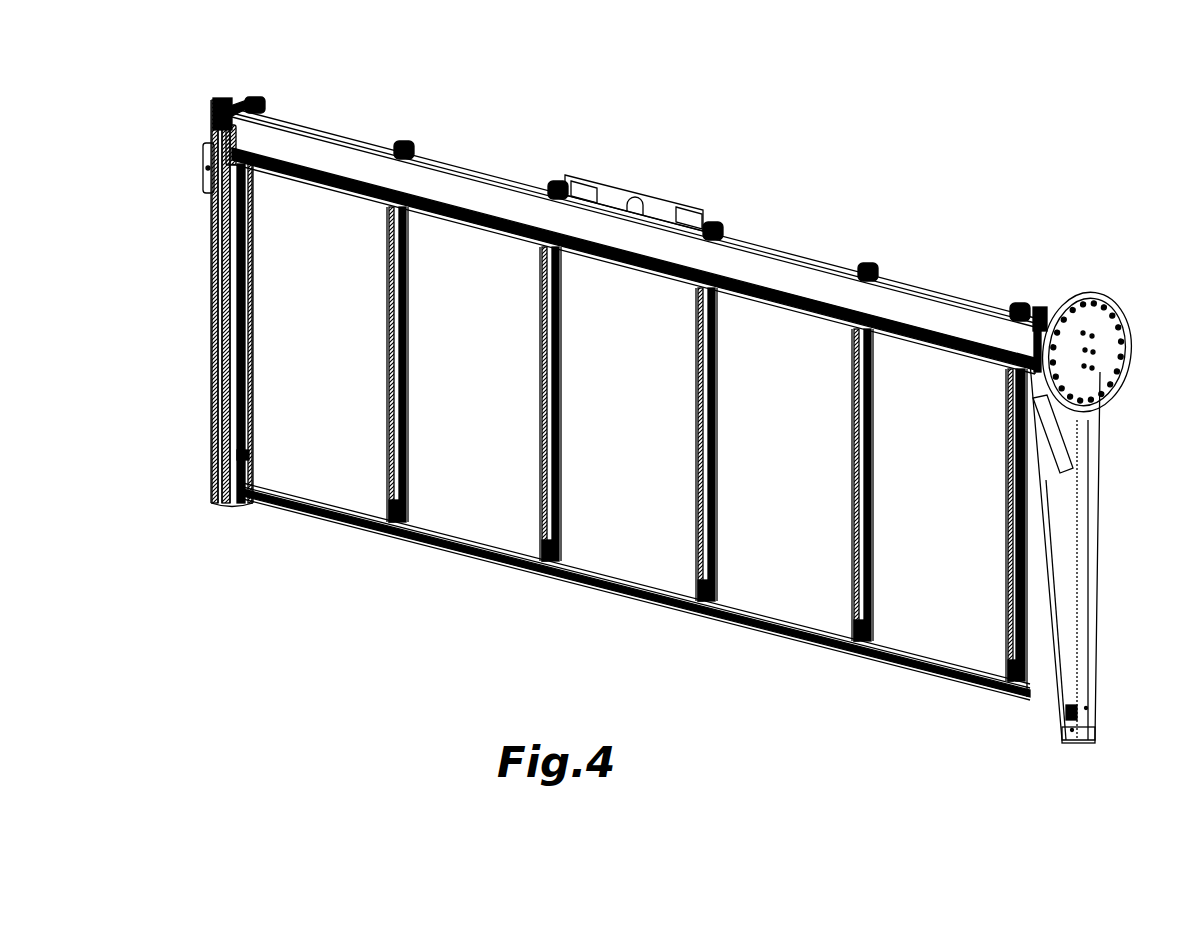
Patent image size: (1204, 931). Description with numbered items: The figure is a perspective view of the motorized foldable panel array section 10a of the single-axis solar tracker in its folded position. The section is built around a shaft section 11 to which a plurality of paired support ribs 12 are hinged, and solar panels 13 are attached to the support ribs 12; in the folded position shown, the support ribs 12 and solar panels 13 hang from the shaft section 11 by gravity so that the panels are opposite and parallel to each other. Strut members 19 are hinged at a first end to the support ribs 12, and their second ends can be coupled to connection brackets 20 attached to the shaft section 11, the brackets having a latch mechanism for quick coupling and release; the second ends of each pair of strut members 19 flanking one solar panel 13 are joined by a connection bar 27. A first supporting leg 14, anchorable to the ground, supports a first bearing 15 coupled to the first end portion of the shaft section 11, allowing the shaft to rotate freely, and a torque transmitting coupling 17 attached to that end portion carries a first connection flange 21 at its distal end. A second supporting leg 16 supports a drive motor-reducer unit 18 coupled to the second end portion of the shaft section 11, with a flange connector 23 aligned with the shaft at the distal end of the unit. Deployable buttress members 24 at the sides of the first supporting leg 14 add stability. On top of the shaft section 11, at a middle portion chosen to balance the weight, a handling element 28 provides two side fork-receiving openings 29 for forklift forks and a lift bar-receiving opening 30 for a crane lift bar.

The motorized foldable panel array section 10a is at (790, 154).
The shaft section 11 is at (784, 270).
The support ribs 12 is at (253, 408).
The solar panels 13 is at (297, 338).
The first supporting leg 14 is at (198, 303).
The first bearing 15 is at (212, 124).
The second supporting leg 16 is at (1082, 580).
The torque transmitting coupling 17 is at (214, 117).
The drive motor-reducer unit 18 is at (1115, 332).
The strut members 19 is at (238, 458).
The connection brackets 20 is at (258, 98).
The first connection flange 21 is at (226, 98).
The flange connector 23 is at (1090, 334).
The deployable buttress members 24 is at (212, 330).
The connection bar 27 is at (262, 500).
The handling element 28 is at (672, 212).
The side fork-receiving openings 29 is at (584, 182).
The lift bar-receiving opening 30 is at (634, 198).